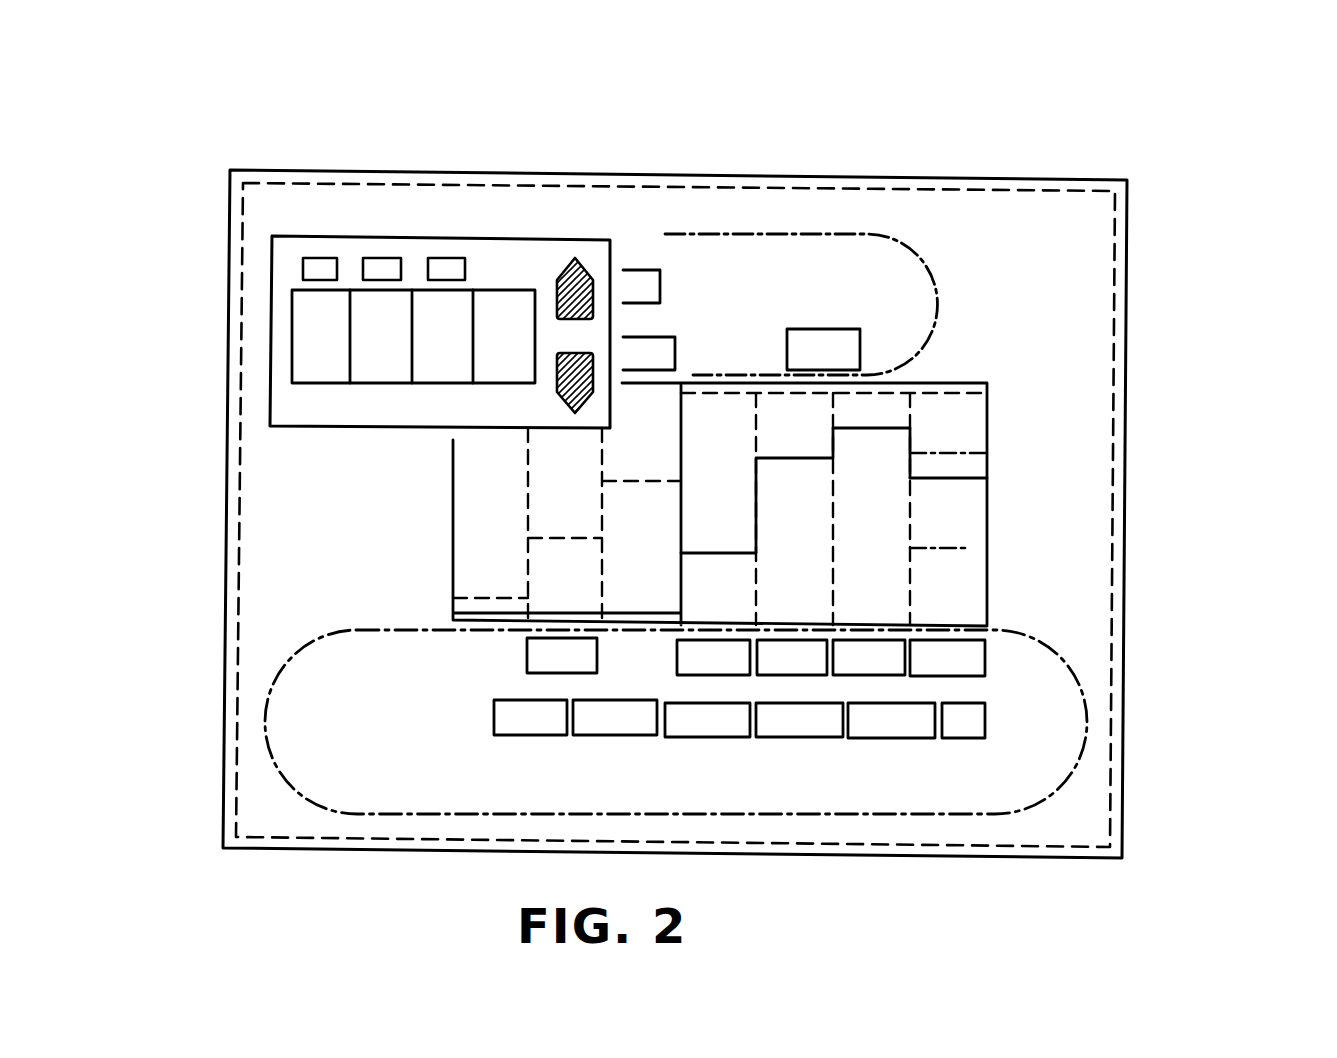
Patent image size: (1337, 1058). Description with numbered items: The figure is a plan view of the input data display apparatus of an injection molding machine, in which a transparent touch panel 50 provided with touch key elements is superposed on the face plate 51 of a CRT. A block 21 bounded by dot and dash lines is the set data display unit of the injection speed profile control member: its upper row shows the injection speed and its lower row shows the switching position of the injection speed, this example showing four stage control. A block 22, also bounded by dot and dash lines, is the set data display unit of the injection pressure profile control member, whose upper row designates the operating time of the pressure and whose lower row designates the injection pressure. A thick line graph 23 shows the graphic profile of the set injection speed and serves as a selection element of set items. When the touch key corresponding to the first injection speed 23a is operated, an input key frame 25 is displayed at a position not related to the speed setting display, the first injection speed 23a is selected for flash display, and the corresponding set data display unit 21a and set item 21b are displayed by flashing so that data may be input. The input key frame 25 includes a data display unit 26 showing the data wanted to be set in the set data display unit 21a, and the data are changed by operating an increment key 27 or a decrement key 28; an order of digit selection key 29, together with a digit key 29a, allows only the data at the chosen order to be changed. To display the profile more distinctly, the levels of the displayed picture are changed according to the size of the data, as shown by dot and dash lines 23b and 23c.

The transparent touch panel 50 is at (293, 170).
The face plate of CRT 51 is at (462, 186).
The input key frame 25 is at (577, 238).
The set data display unit of injection pressure profile control member 22 is at (913, 253).
The order of digit selection key 29 is at (472, 233).
The digit selection key 29a is at (303, 268).
The data display unit 26 is at (292, 345).
The increment key 27 is at (561, 278).
The decrement key 28 is at (559, 402).
The thick line graph 23 is at (910, 438).
The first injection speed 23a is at (958, 478).
The dot and dash line 23b is at (972, 454).
The dot and dash line 23c is at (966, 548).
The set data display unit of injection speed profile control member 21 is at (950, 817).
The set data display unit 21a is at (977, 660).
The set item 21b is at (975, 692).